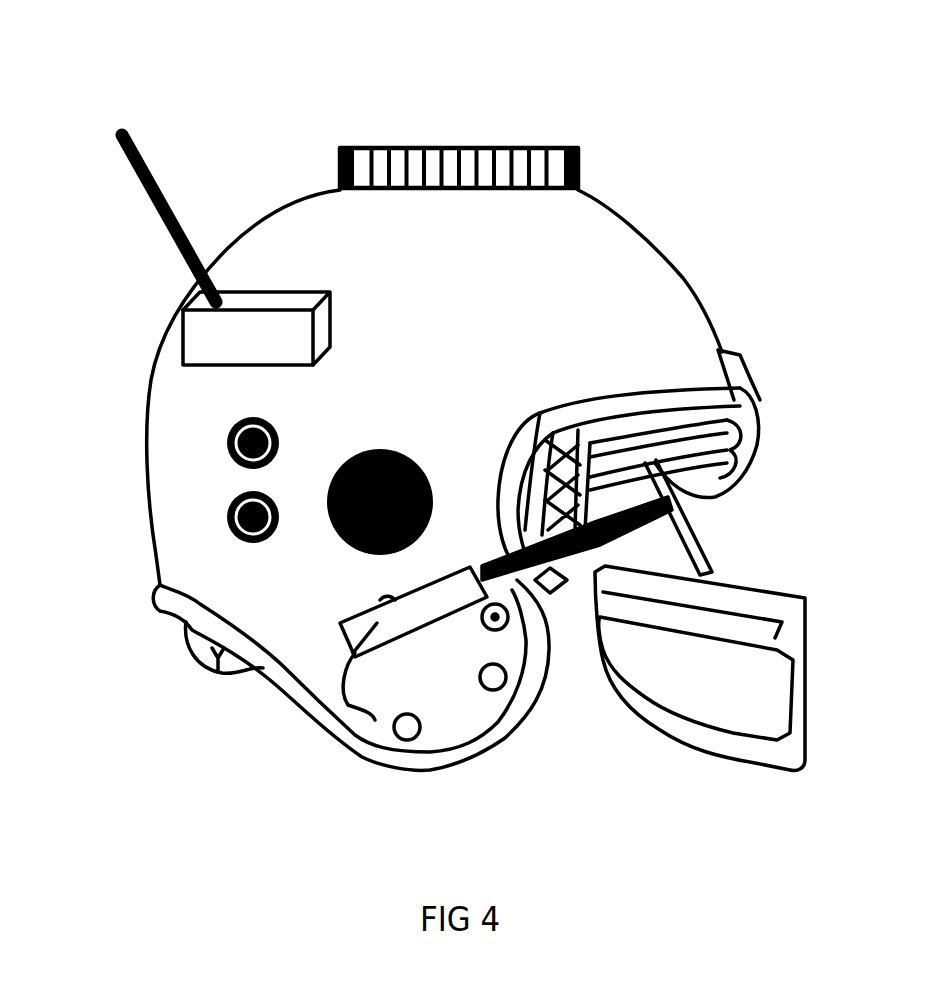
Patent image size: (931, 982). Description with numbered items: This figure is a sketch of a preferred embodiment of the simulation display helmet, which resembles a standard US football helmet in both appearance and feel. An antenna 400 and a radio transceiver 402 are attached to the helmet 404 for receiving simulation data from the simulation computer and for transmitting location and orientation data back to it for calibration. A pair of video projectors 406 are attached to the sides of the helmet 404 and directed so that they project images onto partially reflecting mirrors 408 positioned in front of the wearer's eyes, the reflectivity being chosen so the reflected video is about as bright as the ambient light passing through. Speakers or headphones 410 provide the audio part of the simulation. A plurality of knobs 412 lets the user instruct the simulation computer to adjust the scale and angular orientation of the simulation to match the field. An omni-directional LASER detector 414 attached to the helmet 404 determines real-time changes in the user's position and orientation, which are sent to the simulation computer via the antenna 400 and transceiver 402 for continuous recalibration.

The antenna 400 is at (158, 180).
The radio transceiver 402 is at (292, 303).
The helmet 404 is at (637, 297).
The video projectors 406 is at (375, 730).
The partially reflecting mirrors 408 is at (683, 537).
The speakers or headphones 410 is at (343, 540).
The knobs 412 is at (227, 464).
The omni-directional LASER detector 414 is at (503, 163).